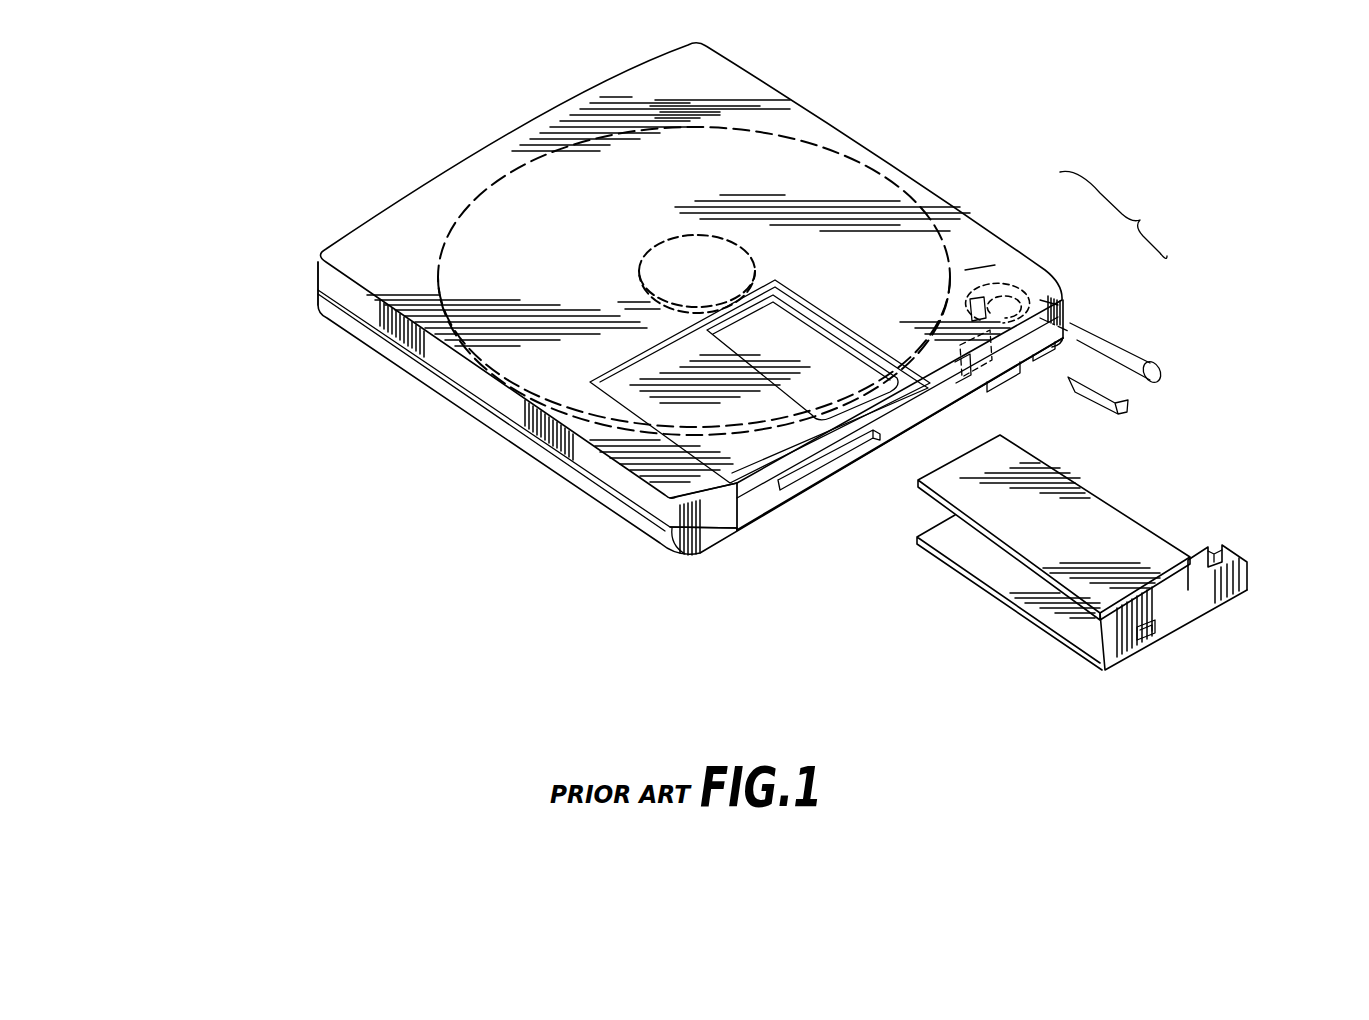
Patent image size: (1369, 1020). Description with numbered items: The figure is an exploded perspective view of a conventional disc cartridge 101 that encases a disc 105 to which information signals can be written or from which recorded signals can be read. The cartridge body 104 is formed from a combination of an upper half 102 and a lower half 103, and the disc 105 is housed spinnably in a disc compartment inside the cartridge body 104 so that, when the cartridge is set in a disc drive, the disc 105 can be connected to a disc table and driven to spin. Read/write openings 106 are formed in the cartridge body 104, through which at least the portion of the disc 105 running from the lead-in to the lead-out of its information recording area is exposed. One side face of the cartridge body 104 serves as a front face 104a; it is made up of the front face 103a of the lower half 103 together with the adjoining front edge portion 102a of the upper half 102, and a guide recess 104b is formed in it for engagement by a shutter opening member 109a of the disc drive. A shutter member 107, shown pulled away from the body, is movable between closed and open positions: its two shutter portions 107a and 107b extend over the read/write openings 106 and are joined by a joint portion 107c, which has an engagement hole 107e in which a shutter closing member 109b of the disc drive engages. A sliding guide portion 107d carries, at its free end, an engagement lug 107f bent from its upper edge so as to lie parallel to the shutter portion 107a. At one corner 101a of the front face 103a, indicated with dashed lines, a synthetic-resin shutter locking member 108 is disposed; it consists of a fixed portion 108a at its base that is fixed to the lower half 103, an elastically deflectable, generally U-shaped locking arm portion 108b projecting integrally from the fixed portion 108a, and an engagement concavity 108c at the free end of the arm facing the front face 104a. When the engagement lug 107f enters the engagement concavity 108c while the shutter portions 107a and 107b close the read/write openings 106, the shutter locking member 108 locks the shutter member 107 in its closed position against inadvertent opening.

The disc cartridge 101 is at (695, 307).
The corner 101a is at (976, 268).
The upper half 102 is at (318, 272).
The lower half 103 is at (320, 308).
The cartridge body 104 is at (229, 240).
The upper shell front portion 102a is at (720, 510).
The front face of the lower half 103a is at (716, 540).
The front face 104a is at (833, 535).
The guide recess 104b is at (780, 496).
The disc 105 is at (505, 392).
The read/write openings 106 is at (802, 320).
The shutter member 107 is at (1107, 575).
The shutter portion 107a is at (1093, 497).
The shutter portion 107b is at (993, 577).
The joint portion 107c is at (1117, 662).
The sliding guide portion 107d is at (1242, 592).
The engagement hole 107e is at (1150, 636).
The engagement lug 107f is at (1220, 545).
The shutter locking member 108 is at (1205, 215).
The fixed portion 108a is at (1000, 283).
The locking arm portion 108b is at (1051, 297).
The engagement concavity 108c is at (980, 377).
The shutter opening member 109a is at (1148, 362).
The shutter closing member 109b is at (1127, 403).